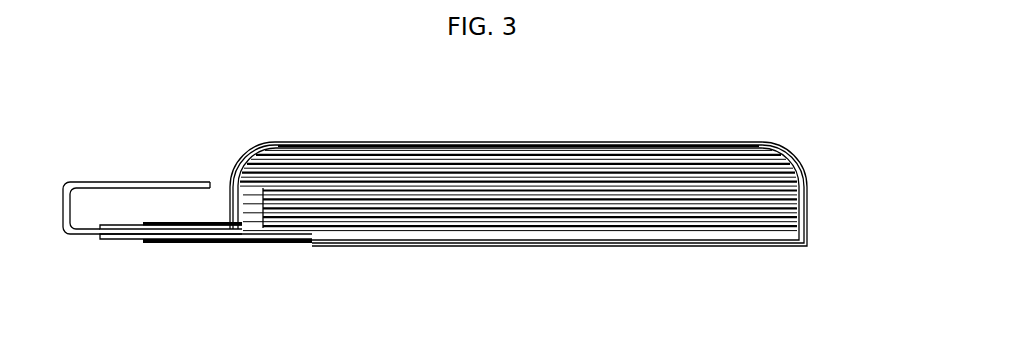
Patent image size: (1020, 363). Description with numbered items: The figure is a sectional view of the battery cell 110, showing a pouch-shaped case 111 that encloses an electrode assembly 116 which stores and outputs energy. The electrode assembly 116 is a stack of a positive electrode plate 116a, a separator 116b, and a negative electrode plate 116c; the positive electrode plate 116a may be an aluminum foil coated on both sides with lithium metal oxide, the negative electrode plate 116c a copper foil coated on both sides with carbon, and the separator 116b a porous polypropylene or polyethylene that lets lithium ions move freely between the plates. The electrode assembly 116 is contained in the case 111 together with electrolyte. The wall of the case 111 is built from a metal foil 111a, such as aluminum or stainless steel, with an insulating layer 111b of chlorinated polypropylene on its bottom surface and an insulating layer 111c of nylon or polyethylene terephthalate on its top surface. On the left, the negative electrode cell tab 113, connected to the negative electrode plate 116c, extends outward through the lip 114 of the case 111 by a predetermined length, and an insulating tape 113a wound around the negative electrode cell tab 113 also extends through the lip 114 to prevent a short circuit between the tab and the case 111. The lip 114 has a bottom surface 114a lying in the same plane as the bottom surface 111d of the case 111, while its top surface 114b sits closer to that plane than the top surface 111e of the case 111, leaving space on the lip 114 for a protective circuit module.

The battery cell 110 is at (483, 180).
The case 111 is at (576, 193).
The metal foil 111a is at (802, 166).
The insulating layer 111b is at (804, 187).
The insulating layer 111c is at (806, 207).
The bottom surface of the case 111d is at (267, 247).
The top surface of the case 111e is at (283, 143).
The negative electrode cell tab 113 is at (72, 235).
The insulating tape 113a is at (113, 240).
The lip 114 is at (160, 220).
The bottom surface of the lip 114a is at (195, 244).
The top surface of the lip 114b is at (197, 223).
The electrode assembly 116 is at (518, 146).
The positive electrode plate 116a is at (593, 145).
The separator 116b is at (643, 155).
The negative electrode plate 116c is at (582, 91).